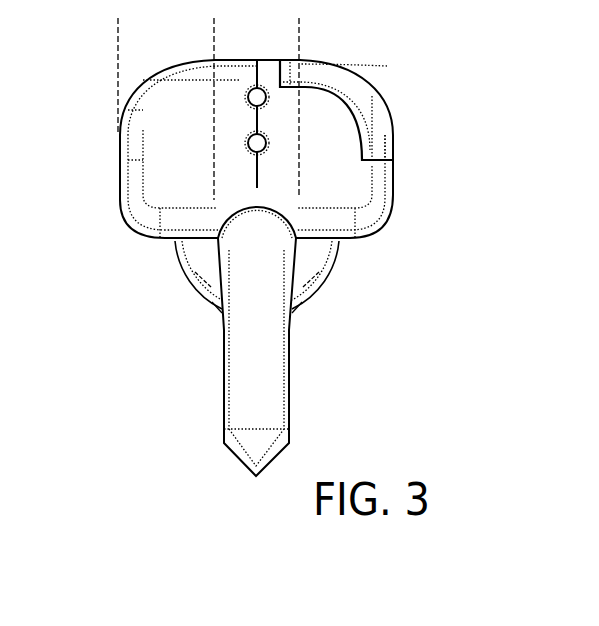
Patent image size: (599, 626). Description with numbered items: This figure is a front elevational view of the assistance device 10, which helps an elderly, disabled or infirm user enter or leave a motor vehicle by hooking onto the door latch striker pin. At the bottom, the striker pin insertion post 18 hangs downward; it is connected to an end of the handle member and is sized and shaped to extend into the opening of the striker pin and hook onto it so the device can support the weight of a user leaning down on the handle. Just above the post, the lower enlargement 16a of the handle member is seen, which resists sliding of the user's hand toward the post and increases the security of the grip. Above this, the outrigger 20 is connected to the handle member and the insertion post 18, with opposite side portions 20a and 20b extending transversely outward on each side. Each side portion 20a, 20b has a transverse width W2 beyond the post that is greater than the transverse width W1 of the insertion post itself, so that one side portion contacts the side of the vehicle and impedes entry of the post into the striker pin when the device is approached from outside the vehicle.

The assistance device 10 is at (381, 291).
The lower enlargement 16a is at (183, 257).
The striker pin insertion post 18 is at (230, 343).
The outrigger 20 is at (399, 180).
The side portion 20a is at (133, 205).
The side portion 20b is at (377, 220).
The transverse width of insertion post W1 is at (298, 35).
The transverse width of side portion W2 is at (213, 35).